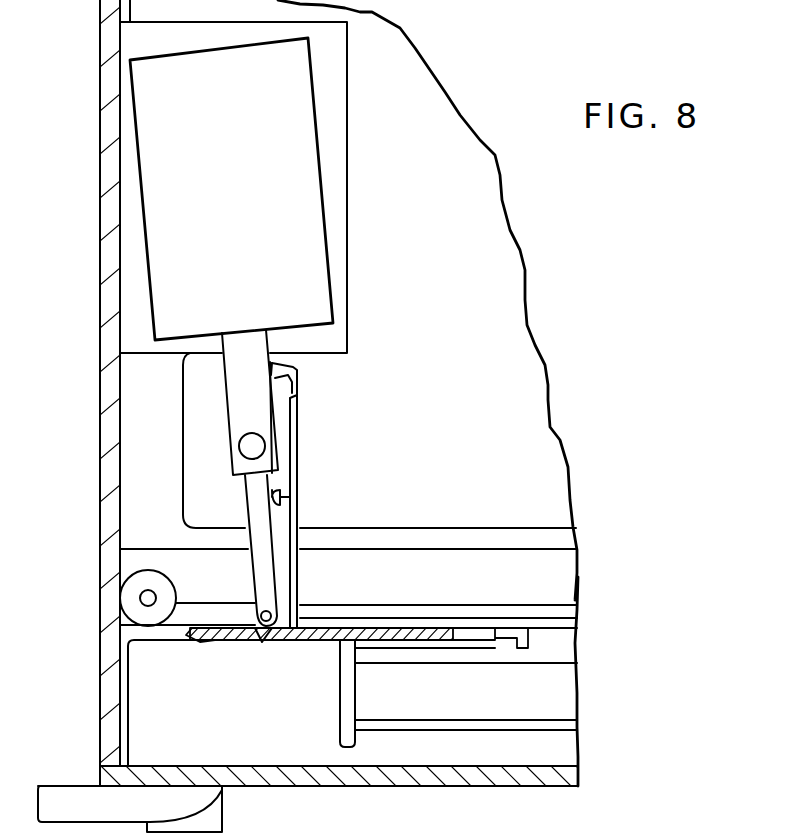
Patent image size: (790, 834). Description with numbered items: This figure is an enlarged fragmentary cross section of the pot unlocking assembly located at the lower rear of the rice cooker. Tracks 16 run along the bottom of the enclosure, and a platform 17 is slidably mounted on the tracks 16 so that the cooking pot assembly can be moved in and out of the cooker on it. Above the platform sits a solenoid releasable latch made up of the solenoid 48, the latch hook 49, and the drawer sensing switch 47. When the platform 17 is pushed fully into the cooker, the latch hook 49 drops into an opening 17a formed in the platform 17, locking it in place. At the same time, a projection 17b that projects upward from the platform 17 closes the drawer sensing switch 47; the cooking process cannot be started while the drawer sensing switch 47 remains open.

The tracks 16 is at (385, 688).
The platform 17 is at (256, 648).
The opening 17a is at (282, 640).
The projection 17b is at (298, 480).
The drawer sensing switch 47 is at (190, 403).
The solenoid 48 is at (330, 262).
The latch hook 49 is at (140, 600).